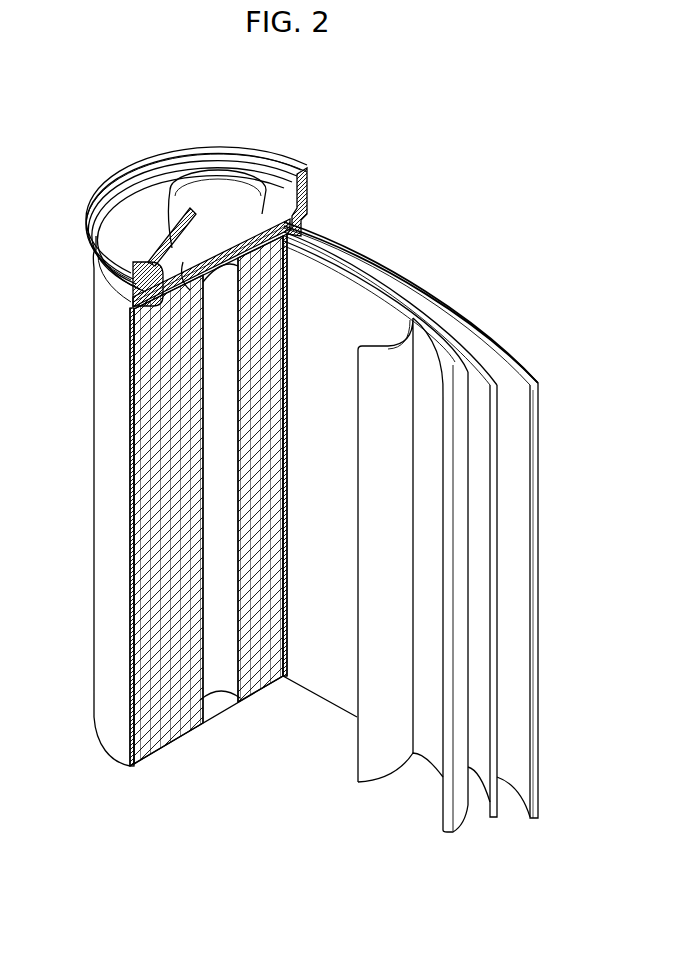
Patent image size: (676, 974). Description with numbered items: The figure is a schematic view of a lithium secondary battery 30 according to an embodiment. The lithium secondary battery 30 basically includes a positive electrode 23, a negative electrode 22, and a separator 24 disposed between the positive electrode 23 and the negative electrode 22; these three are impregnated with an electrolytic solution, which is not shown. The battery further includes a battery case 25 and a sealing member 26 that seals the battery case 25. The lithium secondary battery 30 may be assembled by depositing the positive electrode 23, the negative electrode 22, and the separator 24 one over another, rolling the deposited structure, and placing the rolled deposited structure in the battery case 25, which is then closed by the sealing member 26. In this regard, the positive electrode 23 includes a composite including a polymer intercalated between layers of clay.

The negative electrode 22 is at (520, 352).
The positive electrode 23 is at (457, 353).
The separator 24 is at (388, 348).
The battery case 25 is at (99, 491).
The sealing member 26 is at (195, 183).
The lithium secondary battery 30 is at (193, 192).